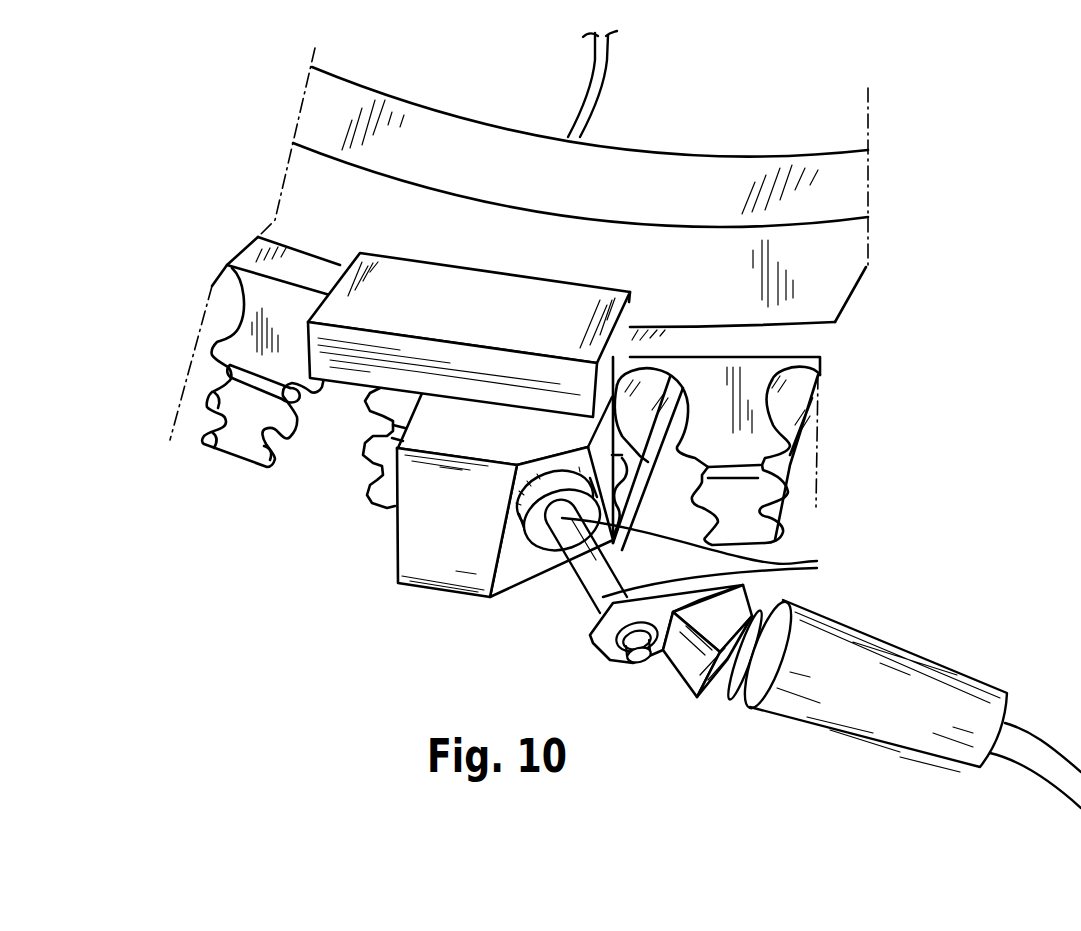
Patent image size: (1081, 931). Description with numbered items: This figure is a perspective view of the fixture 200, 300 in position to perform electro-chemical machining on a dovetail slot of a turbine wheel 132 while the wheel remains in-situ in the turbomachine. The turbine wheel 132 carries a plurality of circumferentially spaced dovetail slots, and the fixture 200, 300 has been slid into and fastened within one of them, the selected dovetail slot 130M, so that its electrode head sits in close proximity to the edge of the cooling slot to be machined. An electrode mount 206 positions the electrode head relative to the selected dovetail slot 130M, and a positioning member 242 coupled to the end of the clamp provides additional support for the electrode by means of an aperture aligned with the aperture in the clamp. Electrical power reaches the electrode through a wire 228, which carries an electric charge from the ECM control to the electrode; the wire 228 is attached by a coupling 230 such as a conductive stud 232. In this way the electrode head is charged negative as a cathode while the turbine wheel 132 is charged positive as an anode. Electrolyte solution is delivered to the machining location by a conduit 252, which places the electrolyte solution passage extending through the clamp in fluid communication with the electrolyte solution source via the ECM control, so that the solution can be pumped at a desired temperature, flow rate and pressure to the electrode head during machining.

The turbine wheel 132 is at (365, 235).
The conduit 252 is at (600, 107).
The fixture 200 is at (510, 347).
The fixture 300 is at (610, 372).
The electrode mount 206 is at (434, 550).
The positioning member 242 is at (462, 520).
The selected dovetail slot 130M is at (492, 435).
The coupling 230 is at (582, 659).
The conductive stud 232 is at (713, 557).
The wire 228 is at (1037, 754).